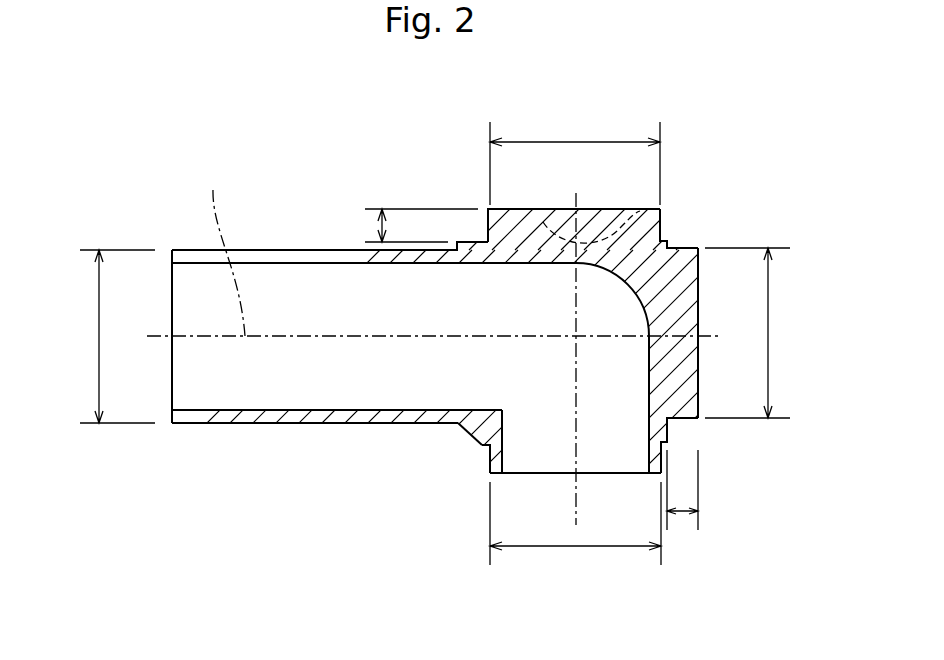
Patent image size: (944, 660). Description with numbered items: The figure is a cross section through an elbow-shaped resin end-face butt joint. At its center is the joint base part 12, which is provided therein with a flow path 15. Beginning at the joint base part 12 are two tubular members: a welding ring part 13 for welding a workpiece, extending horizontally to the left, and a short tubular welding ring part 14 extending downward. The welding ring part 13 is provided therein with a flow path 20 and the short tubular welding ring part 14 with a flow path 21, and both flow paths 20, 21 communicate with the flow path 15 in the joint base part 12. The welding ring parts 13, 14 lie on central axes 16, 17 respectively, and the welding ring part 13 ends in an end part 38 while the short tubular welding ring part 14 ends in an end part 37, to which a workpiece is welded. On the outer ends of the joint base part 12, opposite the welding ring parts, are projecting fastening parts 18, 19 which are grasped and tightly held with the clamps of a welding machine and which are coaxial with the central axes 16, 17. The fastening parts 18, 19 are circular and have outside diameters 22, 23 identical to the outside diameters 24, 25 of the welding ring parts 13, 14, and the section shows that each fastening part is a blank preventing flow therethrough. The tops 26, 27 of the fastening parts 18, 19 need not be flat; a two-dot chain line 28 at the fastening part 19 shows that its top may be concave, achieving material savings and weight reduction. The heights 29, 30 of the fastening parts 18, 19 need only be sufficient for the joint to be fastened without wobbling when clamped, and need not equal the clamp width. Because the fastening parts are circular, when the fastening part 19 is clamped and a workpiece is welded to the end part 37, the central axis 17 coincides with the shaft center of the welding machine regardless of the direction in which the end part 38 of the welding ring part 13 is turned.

The joint base part 12 is at (478, 428).
The welding ring part 13 is at (270, 250).
The short tubular welding ring part 14 is at (492, 458).
The flow path 15 is at (510, 378).
The central axis 16 is at (219, 249).
The central axis 17 is at (576, 485).
The fastening part 18 is at (682, 258).
The fastening part 19 is at (662, 224).
The flow path 20 is at (332, 282).
The flow path 21 is at (615, 460).
The outside diameter 22 is at (770, 327).
The outside diameter 23 is at (572, 142).
The outside diameter 24 is at (99, 330).
The outside diameter 25 is at (556, 548).
The top 26 is at (698, 380).
The top 27 is at (530, 232).
The two-dot chain line 28 is at (615, 240).
The height 29 is at (682, 515).
The height 30 is at (382, 228).
The end part 37 is at (495, 478).
The end part 38 is at (172, 250).